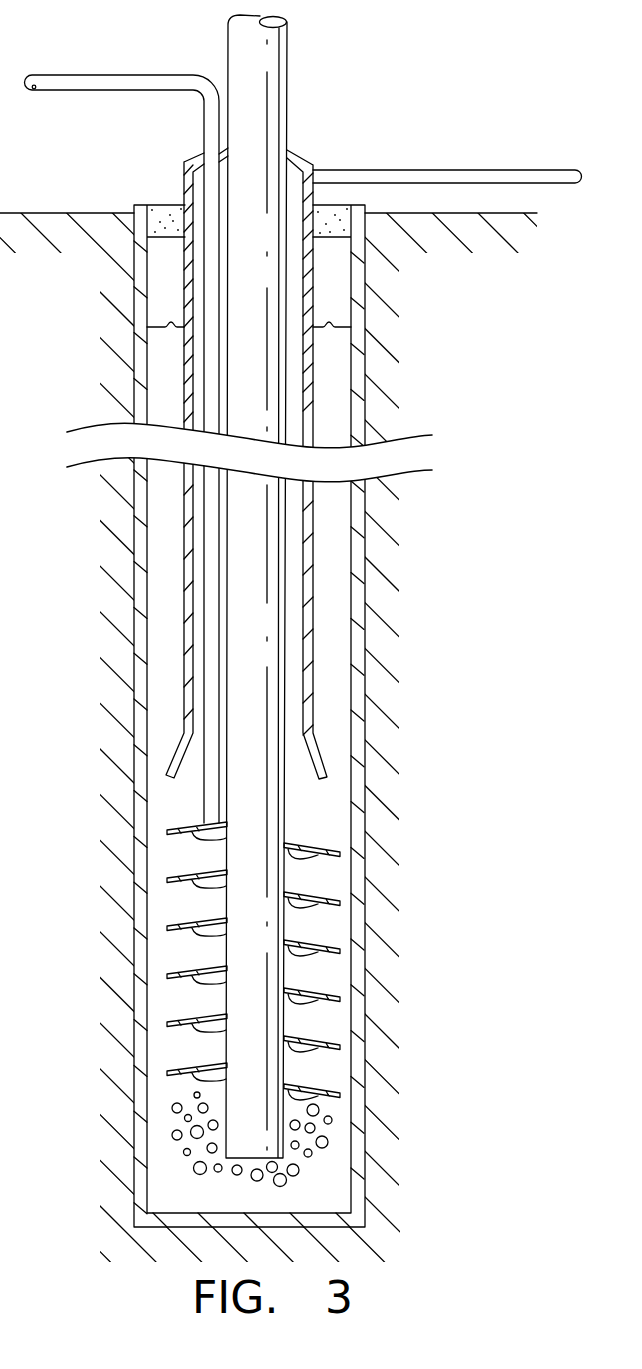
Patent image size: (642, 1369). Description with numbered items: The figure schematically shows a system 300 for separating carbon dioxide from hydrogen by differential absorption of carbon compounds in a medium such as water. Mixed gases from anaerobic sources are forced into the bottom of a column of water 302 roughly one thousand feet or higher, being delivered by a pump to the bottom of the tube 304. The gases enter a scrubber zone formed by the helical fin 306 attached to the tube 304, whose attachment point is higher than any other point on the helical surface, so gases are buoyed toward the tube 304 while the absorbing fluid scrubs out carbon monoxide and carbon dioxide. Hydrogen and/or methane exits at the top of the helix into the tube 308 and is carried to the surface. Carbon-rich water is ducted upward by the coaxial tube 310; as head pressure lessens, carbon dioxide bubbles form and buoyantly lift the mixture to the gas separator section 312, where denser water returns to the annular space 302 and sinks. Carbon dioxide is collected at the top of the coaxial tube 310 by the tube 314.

The in situ bioremediation well system 300 is at (418, 100).
The column of water / annular space 302 is at (337, 576).
The tube 304 is at (283, 806).
The helical fin 306 is at (330, 1032).
The tube 308 is at (60, 72).
The coaxial tube 310 is at (184, 568).
The gas separator section 312 is at (307, 297).
The tube 314 is at (534, 170).